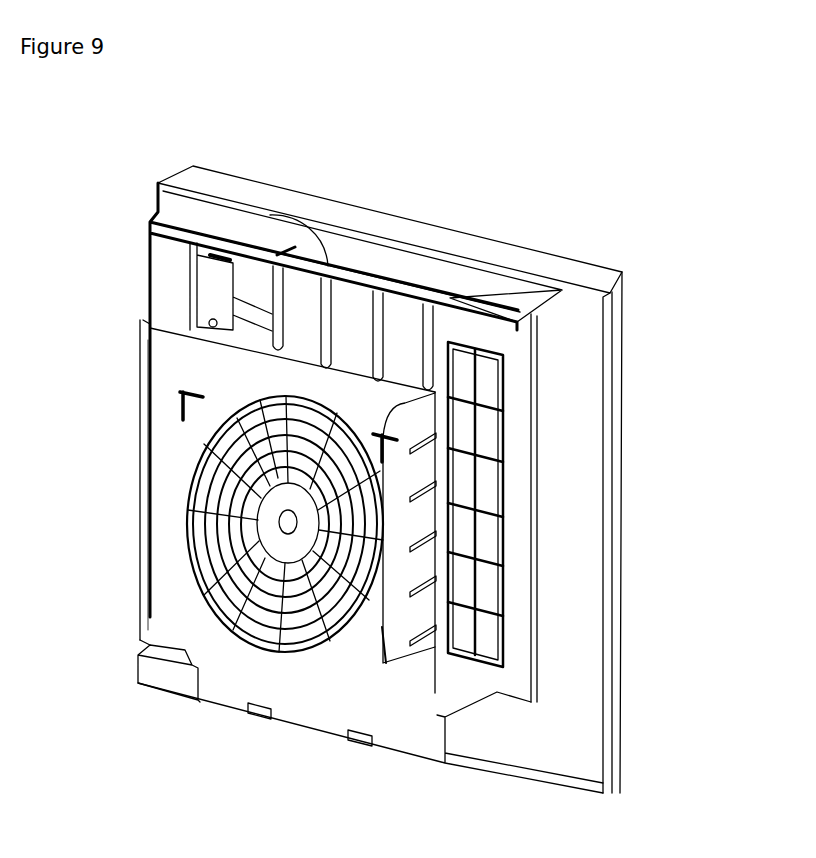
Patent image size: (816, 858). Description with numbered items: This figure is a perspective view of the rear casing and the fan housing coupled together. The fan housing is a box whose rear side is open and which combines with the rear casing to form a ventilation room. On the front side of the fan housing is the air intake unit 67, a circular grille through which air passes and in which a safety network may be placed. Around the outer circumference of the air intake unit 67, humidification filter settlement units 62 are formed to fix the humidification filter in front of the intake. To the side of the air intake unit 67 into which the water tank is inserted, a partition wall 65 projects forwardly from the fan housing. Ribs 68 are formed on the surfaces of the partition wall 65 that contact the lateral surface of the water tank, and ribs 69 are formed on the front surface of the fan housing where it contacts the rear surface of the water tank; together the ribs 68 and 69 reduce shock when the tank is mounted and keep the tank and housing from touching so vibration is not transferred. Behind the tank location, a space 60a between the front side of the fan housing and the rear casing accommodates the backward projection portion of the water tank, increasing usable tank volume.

The space 60a is at (565, 502).
The humidification filter settlement unit 62 is at (375, 445).
The partition wall 65 is at (385, 665).
The air intake unit 67 is at (270, 633).
The ribs 68 is at (488, 550).
The ribs 69 is at (430, 587).